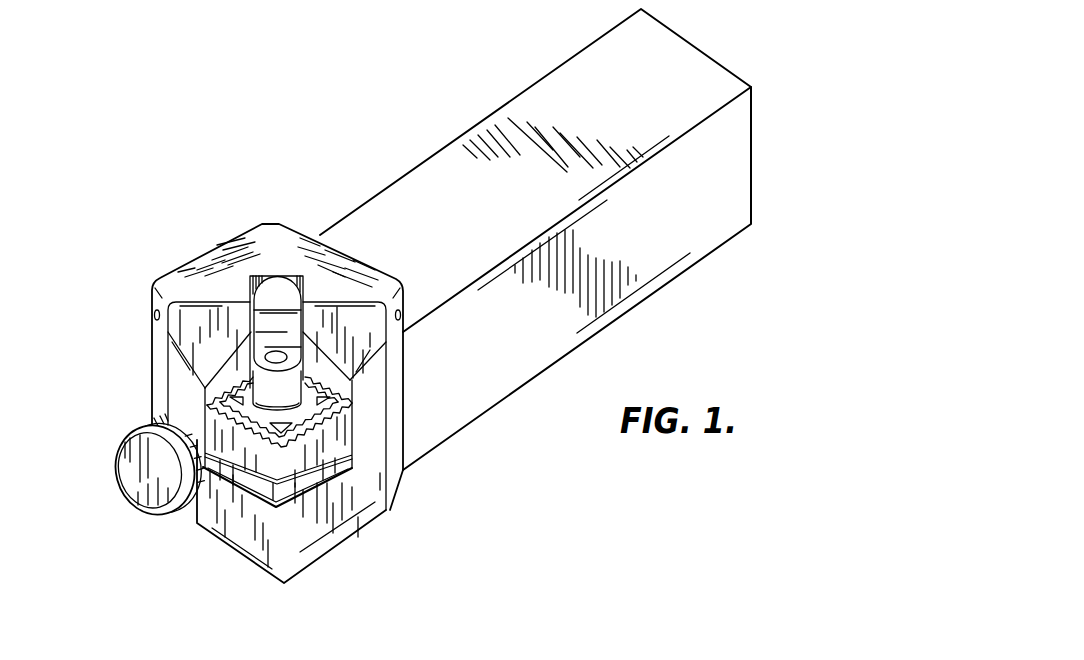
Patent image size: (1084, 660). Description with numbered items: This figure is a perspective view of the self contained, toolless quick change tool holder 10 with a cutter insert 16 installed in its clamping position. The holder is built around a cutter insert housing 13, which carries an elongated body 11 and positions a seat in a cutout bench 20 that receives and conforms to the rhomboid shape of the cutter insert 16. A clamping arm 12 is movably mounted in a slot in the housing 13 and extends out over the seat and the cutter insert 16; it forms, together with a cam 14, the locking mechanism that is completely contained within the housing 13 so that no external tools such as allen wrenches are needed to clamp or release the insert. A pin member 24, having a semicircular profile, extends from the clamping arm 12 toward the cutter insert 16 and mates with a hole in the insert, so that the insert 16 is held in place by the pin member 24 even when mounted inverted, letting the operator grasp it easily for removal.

The self contained, toolless quick change tool holder 10 is at (221, 197).
The elongated housing body 11 is at (664, 221).
The clamping arm 12 is at (274, 298).
The housing 13 is at (212, 282).
The cam 14 is at (156, 424).
The cutter insert 16 is at (298, 456).
The cutout bench 20 is at (205, 387).
The pin member 24 is at (277, 390).